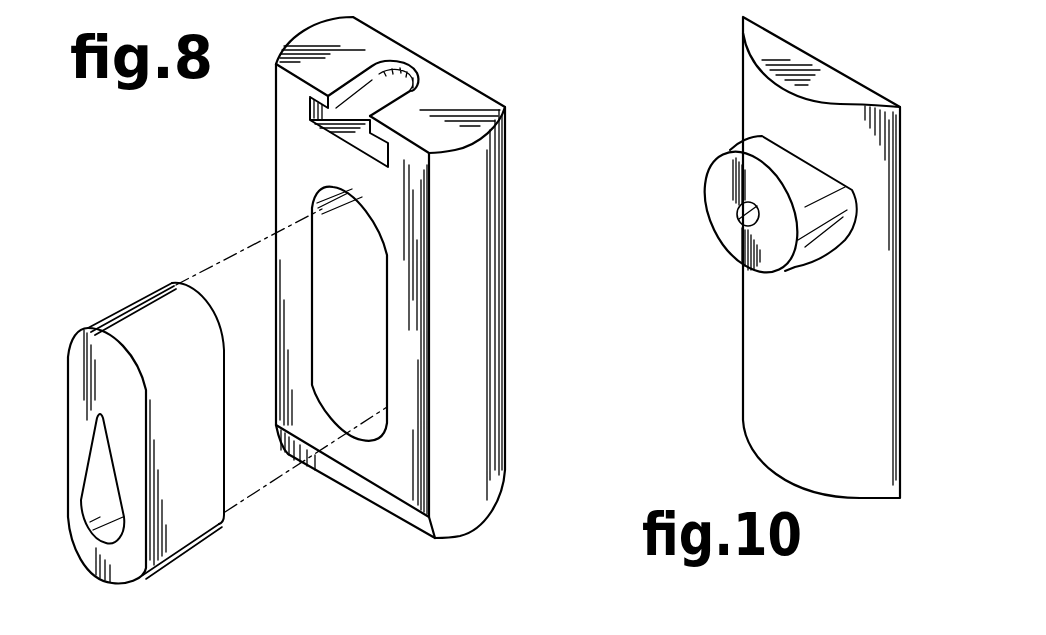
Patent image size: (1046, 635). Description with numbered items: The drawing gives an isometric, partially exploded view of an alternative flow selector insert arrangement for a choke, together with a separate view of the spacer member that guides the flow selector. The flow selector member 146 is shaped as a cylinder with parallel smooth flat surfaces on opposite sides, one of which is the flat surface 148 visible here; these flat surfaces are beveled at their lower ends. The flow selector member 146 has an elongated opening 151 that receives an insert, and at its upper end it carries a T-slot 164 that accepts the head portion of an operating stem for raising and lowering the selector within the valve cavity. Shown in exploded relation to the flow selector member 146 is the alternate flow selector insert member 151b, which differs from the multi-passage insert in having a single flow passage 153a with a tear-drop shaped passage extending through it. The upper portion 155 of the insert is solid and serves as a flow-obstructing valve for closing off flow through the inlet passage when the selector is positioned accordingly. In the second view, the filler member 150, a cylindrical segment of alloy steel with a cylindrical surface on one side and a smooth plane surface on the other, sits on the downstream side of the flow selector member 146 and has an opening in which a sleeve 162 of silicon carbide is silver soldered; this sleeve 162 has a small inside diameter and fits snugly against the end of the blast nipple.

In FIG. 8, the flow selector member 146 is at (258, 212).
In FIG. 8, the flat surface 148 is at (495, 347).
In FIG. 10, the filler member 150 is at (767, 355).
In FIG. 8, the elongated opening 151 is at (353, 310).
In FIG. 8, the alternate flow selector insert member 151b is at (115, 312).
In FIG. 8, the flow passage 153a is at (93, 507).
In FIG. 8, the upper portion of flow selector insert member 155 is at (131, 420).
In FIG. 10, the sleeve 162 is at (760, 152).
In FIG. 8, the T-slot 164 is at (310, 119).